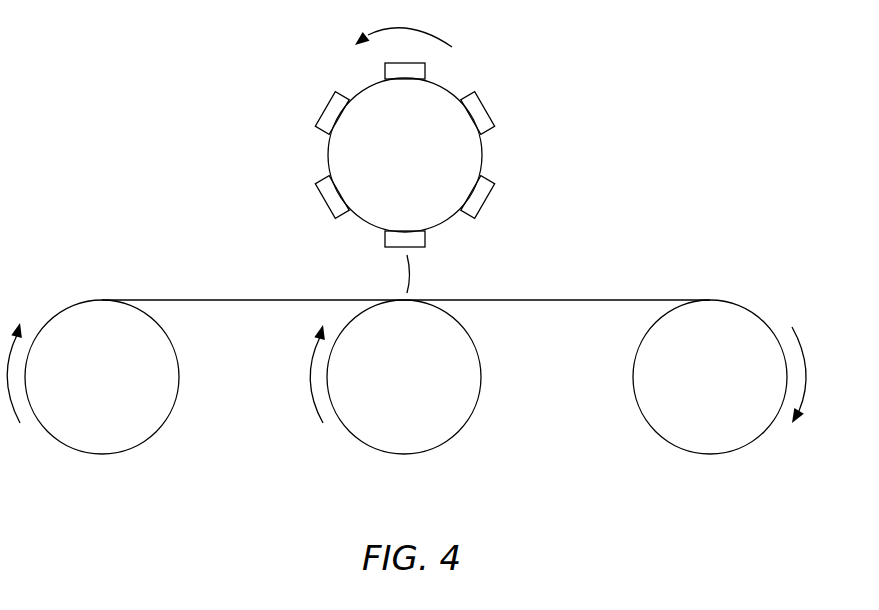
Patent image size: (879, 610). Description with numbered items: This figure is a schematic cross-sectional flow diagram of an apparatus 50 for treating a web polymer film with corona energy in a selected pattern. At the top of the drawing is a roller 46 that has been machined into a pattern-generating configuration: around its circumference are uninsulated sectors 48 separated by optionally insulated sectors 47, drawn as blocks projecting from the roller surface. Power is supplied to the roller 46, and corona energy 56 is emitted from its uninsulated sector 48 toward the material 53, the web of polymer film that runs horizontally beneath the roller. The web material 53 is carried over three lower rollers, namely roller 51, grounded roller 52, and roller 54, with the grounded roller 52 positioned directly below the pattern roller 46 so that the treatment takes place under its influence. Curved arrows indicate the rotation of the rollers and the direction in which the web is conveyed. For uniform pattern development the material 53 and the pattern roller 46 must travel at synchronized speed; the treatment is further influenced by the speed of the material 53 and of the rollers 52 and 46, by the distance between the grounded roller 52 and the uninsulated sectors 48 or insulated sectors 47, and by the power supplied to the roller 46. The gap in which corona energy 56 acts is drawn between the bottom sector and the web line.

The apparatus 50 is at (122, 136).
The roller 46 is at (435, 102).
The optionally insulated sectors 47 is at (485, 160).
The uninsulated sectors 48 is at (425, 238).
The corona energy 56 is at (408, 275).
The material 53 is at (263, 301).
The first roller 51 is at (115, 427).
The grounded roller 52 is at (428, 442).
The third roller 54 is at (697, 438).